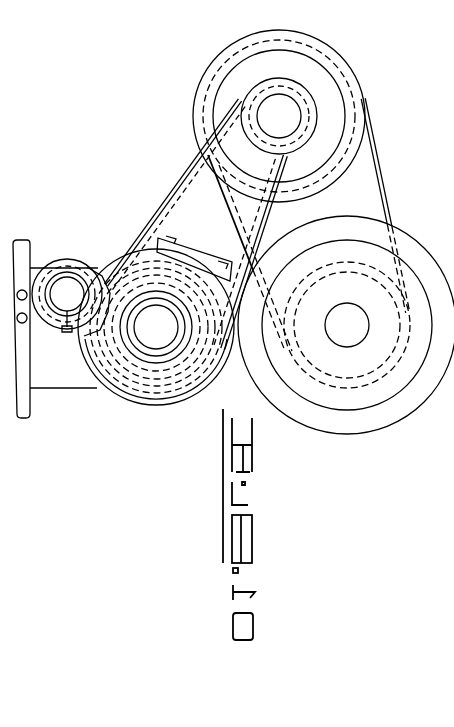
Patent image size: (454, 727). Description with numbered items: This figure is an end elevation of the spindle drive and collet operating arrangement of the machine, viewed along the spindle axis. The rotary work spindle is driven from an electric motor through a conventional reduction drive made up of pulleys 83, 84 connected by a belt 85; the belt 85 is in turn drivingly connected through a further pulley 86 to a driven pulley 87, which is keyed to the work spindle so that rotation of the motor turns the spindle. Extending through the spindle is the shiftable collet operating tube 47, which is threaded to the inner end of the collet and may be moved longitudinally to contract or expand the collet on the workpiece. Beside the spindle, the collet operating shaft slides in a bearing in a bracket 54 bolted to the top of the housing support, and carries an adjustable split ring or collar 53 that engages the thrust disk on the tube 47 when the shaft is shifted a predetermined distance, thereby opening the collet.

The collet operating tube 47 is at (157, 348).
The split ring or collar 53 is at (63, 260).
The bracket 54 is at (74, 388).
The pulley 83 is at (403, 400).
The pulley 84 is at (364, 85).
The belt 85 is at (386, 186).
The pulley 86 is at (160, 203).
The driven pulley 87 is at (142, 406).